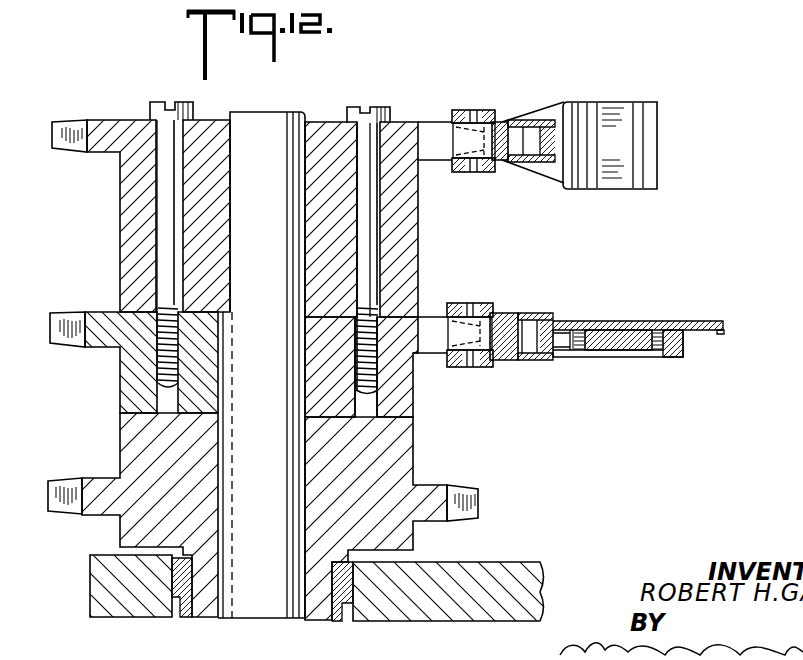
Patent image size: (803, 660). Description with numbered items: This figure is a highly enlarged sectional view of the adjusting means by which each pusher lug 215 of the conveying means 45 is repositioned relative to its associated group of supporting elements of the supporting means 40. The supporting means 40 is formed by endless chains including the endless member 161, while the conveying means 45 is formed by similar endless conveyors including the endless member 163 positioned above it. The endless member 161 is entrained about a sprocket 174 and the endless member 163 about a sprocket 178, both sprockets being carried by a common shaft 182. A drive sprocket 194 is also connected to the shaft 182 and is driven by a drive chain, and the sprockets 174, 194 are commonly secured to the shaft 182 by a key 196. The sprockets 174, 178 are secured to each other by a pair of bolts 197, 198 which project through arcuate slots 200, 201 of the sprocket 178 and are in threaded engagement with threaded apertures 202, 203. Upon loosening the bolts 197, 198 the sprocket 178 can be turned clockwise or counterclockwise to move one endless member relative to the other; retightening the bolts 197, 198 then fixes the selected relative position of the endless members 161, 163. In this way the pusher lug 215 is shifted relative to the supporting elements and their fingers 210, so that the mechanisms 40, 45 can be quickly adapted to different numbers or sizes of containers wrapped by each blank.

The supporting means 40 is at (693, 290).
The conveying means 45 is at (666, 125).
The endless member 161 is at (500, 268).
The endless member 163 is at (512, 172).
The sprocket 174 is at (415, 378).
The sprocket 178 is at (400, 208).
The shaft 182 is at (277, 288).
The sprocket 194 is at (400, 468).
The key 196 is at (222, 454).
The bolt 197 is at (195, 62).
The bolt 198 is at (385, 106).
The arcuate slot 200 is at (166, 214).
The arcuate slot 201 is at (378, 245).
The threaded aperture 202 is at (158, 393).
The threaded aperture 203 is at (360, 404).
The finger 210 is at (720, 335).
The pusher lug 215 is at (640, 150).